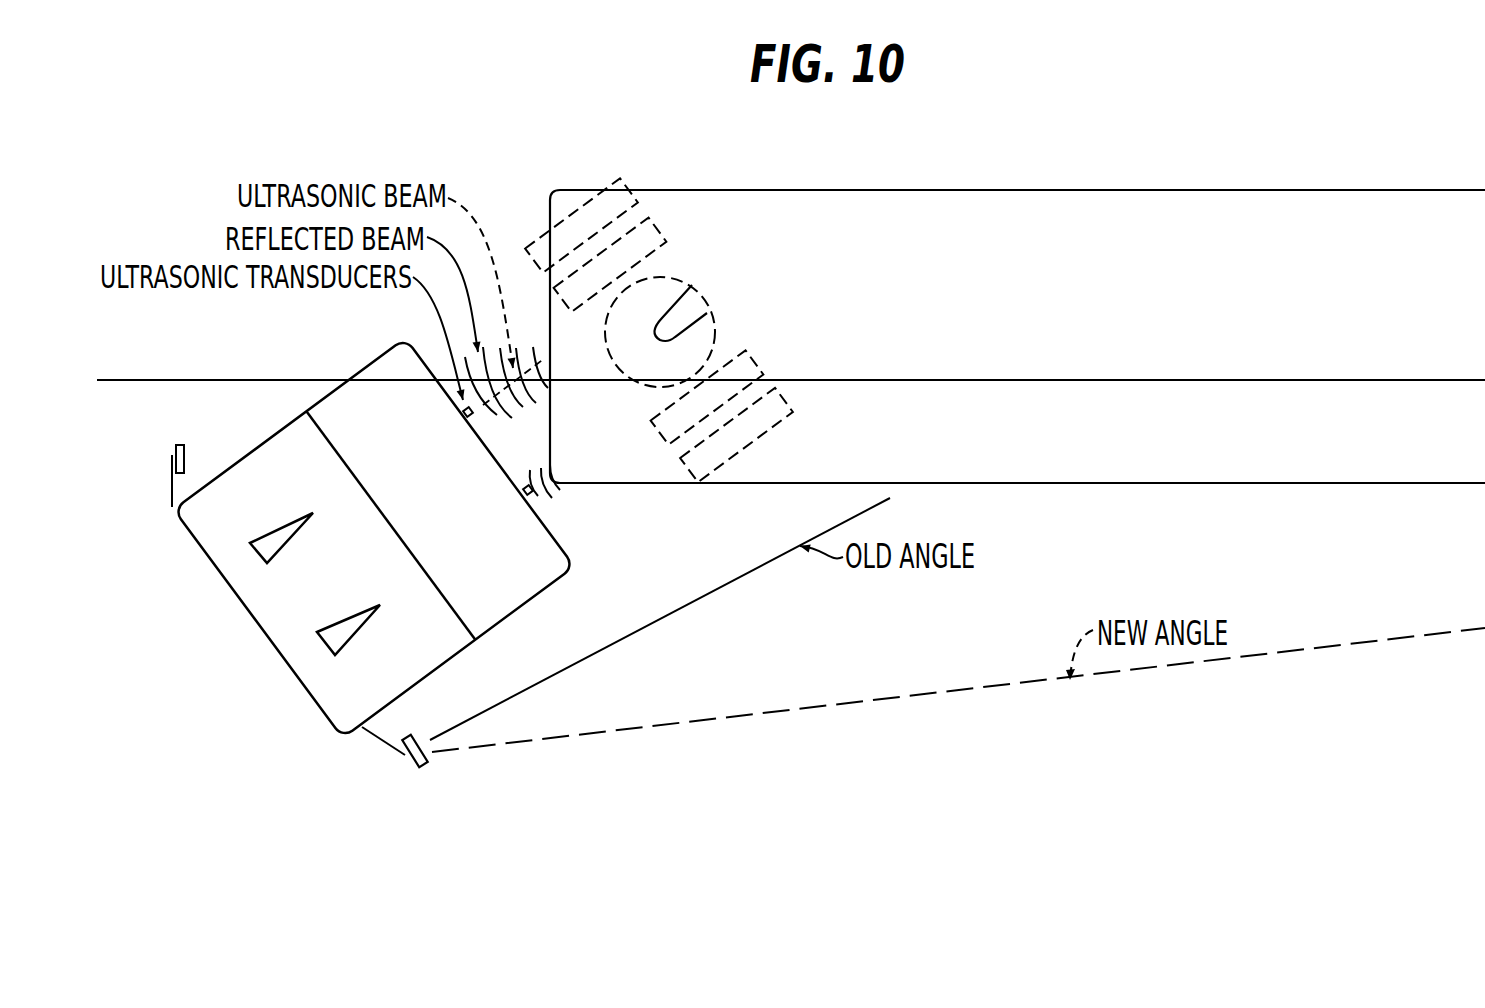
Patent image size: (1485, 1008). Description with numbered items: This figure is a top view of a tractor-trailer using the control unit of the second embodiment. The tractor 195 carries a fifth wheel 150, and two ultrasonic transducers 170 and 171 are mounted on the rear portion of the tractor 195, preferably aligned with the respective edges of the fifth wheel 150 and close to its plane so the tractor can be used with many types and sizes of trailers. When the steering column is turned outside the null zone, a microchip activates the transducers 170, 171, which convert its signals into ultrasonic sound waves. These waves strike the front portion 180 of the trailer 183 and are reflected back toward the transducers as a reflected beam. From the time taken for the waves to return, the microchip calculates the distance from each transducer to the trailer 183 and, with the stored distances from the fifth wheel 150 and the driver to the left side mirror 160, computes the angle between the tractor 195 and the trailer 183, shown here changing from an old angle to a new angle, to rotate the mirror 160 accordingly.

The fifth wheel 150 is at (673, 277).
The left side mirror 160 is at (413, 755).
The transducer 170 is at (532, 493).
The transducer 171 is at (463, 415).
The front portion 180 is at (550, 218).
The trailer 183 is at (773, 188).
The tractor 195 is at (268, 440).